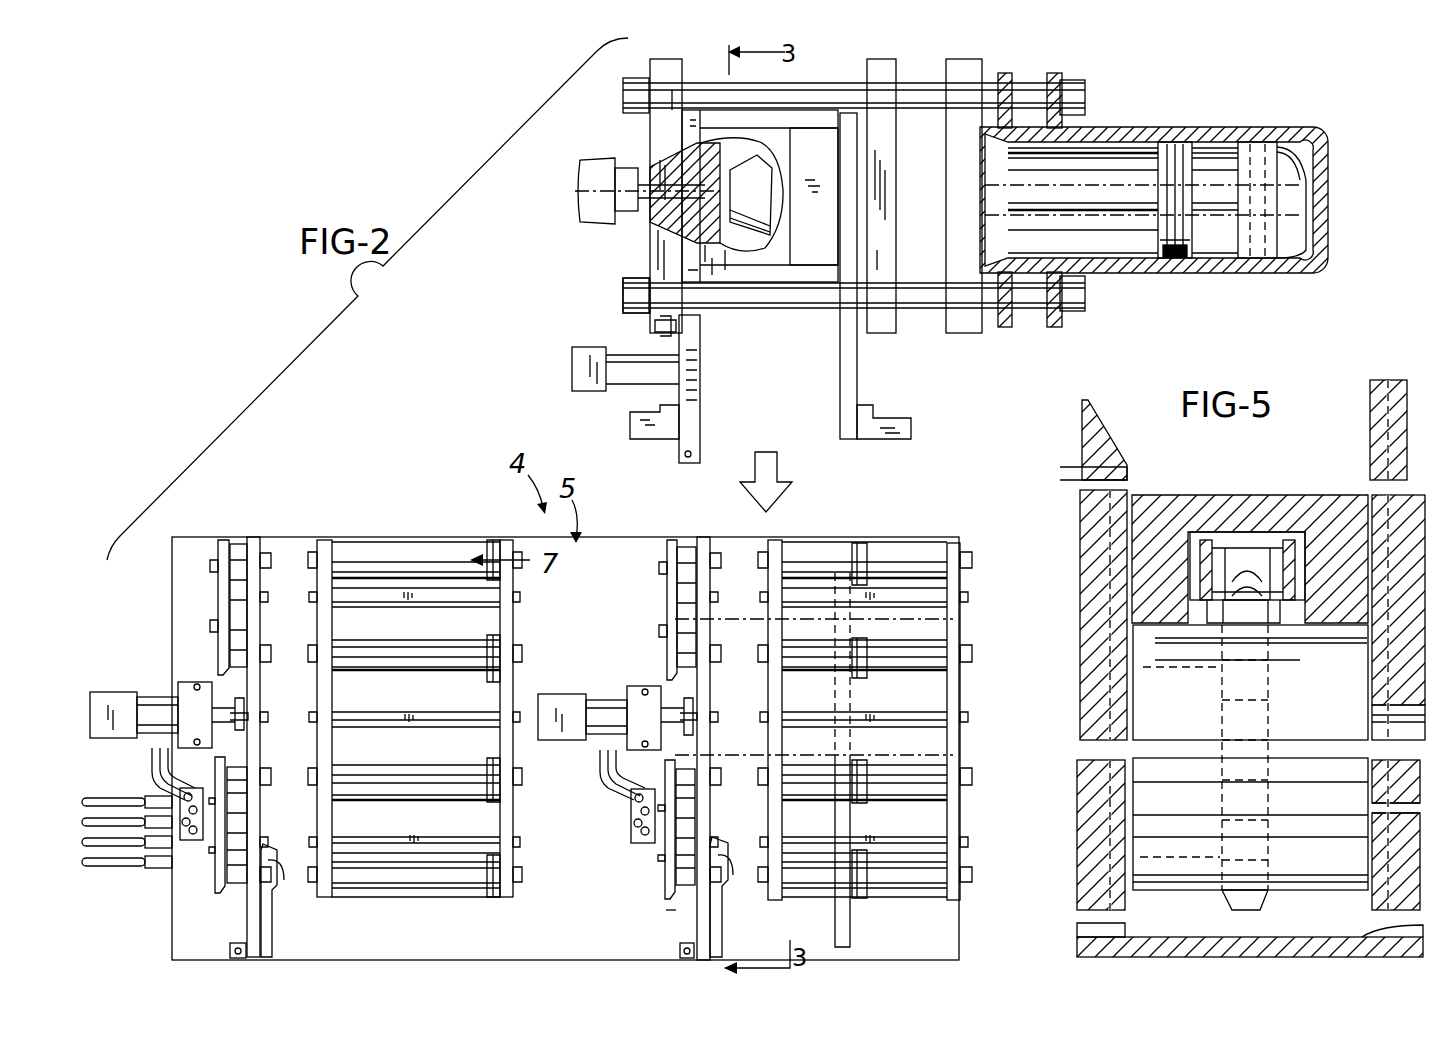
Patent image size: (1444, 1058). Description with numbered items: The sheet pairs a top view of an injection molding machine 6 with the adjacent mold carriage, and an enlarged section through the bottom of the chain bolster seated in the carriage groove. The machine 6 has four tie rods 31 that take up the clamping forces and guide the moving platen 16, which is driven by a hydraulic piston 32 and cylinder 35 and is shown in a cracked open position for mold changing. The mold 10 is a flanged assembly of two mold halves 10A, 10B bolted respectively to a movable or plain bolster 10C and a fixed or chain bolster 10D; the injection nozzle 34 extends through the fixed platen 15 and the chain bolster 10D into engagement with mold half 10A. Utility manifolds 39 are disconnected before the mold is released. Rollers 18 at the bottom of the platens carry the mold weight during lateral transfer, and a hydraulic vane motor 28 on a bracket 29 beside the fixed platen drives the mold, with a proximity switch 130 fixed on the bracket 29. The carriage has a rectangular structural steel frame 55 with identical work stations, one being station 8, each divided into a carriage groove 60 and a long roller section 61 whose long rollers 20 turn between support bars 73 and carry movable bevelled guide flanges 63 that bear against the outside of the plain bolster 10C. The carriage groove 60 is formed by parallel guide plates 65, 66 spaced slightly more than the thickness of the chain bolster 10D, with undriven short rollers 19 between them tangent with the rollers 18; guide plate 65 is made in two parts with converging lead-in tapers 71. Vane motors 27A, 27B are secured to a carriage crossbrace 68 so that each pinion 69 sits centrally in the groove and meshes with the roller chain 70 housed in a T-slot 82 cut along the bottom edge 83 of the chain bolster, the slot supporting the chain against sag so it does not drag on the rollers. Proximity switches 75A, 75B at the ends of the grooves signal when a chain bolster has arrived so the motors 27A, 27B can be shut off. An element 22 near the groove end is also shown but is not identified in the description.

In FIG. 2, the injection molding machine 6 is at (628, 260).
In FIG. 2, the work station 8 is at (798, 562).
In FIG. 2, the mold 10 is at (809, 118).
In FIG. 2, the mold half 10A is at (765, 132).
In FIG. 2, the mold half 10B is at (830, 152).
In FIG. 2, the movable platen bolster 10C is at (846, 269).
In FIG. 2, the fixed platen bolster 10D is at (690, 136).
In FIG. 2, the fixed platen 15 is at (654, 282).
In FIG. 2, the moving platen 16 is at (876, 324).
In FIG. 2, the rollers 18 is at (705, 328).
In FIG. 2, the short rollers 19 is at (240, 622).
In FIG. 5, the short rollers 19 is at (1188, 724).
In FIG. 2, the long rollers 20 is at (388, 567).
In FIG. 2, the latch 22 is at (286, 917).
In FIG. 2, the hydraulic vane motor 27A is at (540, 704).
In FIG. 2, the hydraulic vane motor 27B is at (158, 692).
In FIG. 2, the hydraulic vane motor 28 is at (570, 368).
In FIG. 2, the bracket 29 is at (664, 393).
In FIG. 2, the tie rods 31 is at (919, 91).
In FIG. 2, the hydraulic piston 32 is at (1170, 268).
In FIG. 2, the injection molding nozzle 34 is at (678, 195).
In FIG. 2, the cylinder 35 is at (1234, 275).
In FIG. 2, the utility manifolds 39 is at (646, 434).
In FIG. 2, the frame 55 is at (604, 537).
In FIG. 2, the carriage groove 60 is at (240, 536).
In FIG. 2, the long roller section 61 is at (497, 522).
In FIG. 2, the adjustable guide 63 is at (492, 582).
In FIG. 2, the guide plate 65 is at (222, 568).
In FIG. 5, the guide plate 65 is at (1078, 472).
In FIG. 2, the guide plate 66 is at (255, 798).
In FIG. 5, the guide plate 66 is at (1373, 495).
In FIG. 2, the carriage crossbrace 68 is at (622, 674).
In FIG. 5, the carriage crossbrace 68 is at (1193, 937).
In FIG. 2, the pinion 69 is at (702, 373).
In FIG. 5, the pinion 69 is at (1270, 706).
In FIG. 5, the roller chain 70 is at (1239, 522).
In FIG. 2, the lead-in tapers 71 is at (225, 540).
In FIG. 5, the lead-in tapers 71 is at (1112, 462).
In FIG. 2, the support bars 73 is at (324, 540).
In FIG. 2, the proximity switch 75A is at (679, 953).
In FIG. 2, the proximity switch 75B is at (233, 948).
In FIG. 5, the T-slot 82 is at (1205, 530).
In FIG. 5, the bottom edge 83 is at (1293, 625).
In FIG. 2, the proximity switch 130 is at (652, 330).